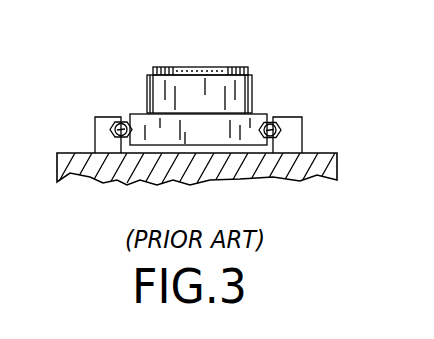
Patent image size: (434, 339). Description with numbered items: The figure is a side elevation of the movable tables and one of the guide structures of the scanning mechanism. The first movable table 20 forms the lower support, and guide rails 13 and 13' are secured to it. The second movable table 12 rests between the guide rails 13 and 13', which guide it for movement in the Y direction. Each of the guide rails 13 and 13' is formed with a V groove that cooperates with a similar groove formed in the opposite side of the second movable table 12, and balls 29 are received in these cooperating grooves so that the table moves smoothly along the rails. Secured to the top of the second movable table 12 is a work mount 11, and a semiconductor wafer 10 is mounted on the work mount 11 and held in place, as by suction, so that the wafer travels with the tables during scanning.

The semiconductor wafer 10 is at (212, 83).
The work mount 11 is at (255, 78).
The second movable table 12 is at (258, 116).
The guide rail 13 is at (306, 134).
The guide rail 13' is at (90, 120).
The balls 29 is at (124, 114).
The first movable table 20 is at (338, 169).